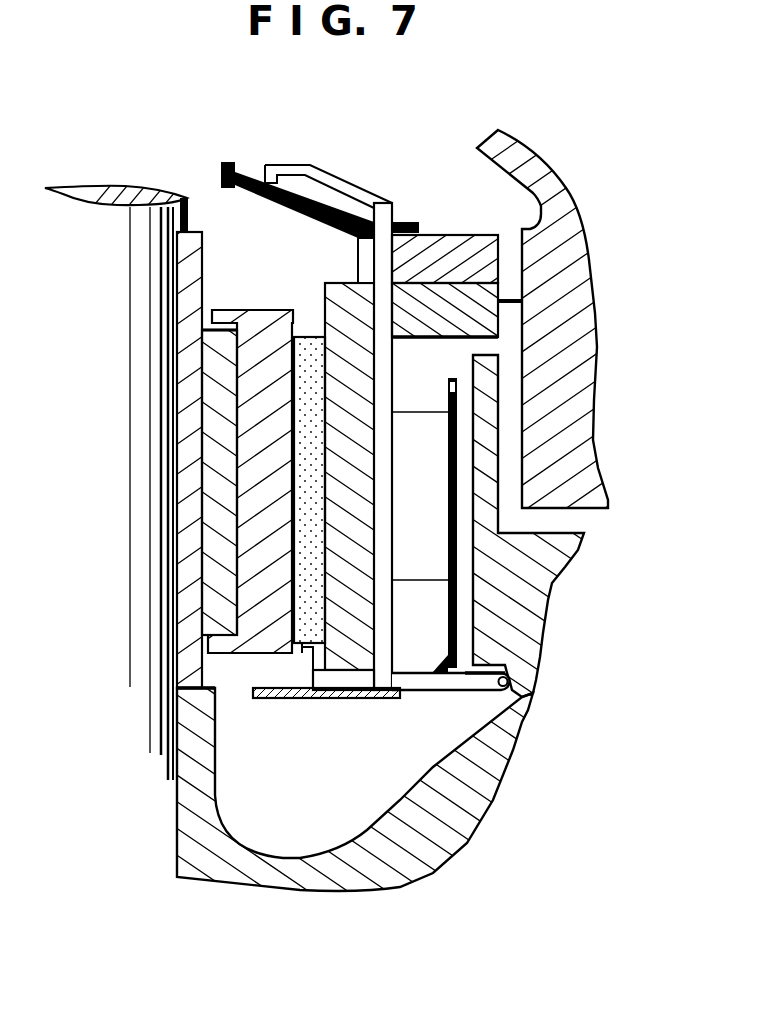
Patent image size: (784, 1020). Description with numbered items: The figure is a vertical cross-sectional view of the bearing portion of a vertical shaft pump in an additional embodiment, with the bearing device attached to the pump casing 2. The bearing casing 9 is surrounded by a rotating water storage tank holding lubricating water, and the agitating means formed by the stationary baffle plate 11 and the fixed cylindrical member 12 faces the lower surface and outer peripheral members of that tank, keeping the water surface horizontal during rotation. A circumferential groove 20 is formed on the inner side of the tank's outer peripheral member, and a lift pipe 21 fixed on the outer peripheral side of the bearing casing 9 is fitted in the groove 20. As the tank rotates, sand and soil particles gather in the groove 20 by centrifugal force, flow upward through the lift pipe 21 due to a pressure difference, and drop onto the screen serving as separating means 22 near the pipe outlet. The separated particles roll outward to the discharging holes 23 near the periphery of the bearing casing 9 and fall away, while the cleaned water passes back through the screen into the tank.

The pump casing 2 is at (578, 211).
The bearing casing 9 is at (498, 320).
The stationary baffle plate 11 is at (291, 699).
The fixed cylindrical member 12 is at (462, 572).
The circumferential groove 20 is at (512, 690).
The lift pipe 21 is at (440, 681).
The separating means 22 is at (283, 207).
The discharging holes 23 is at (520, 267).